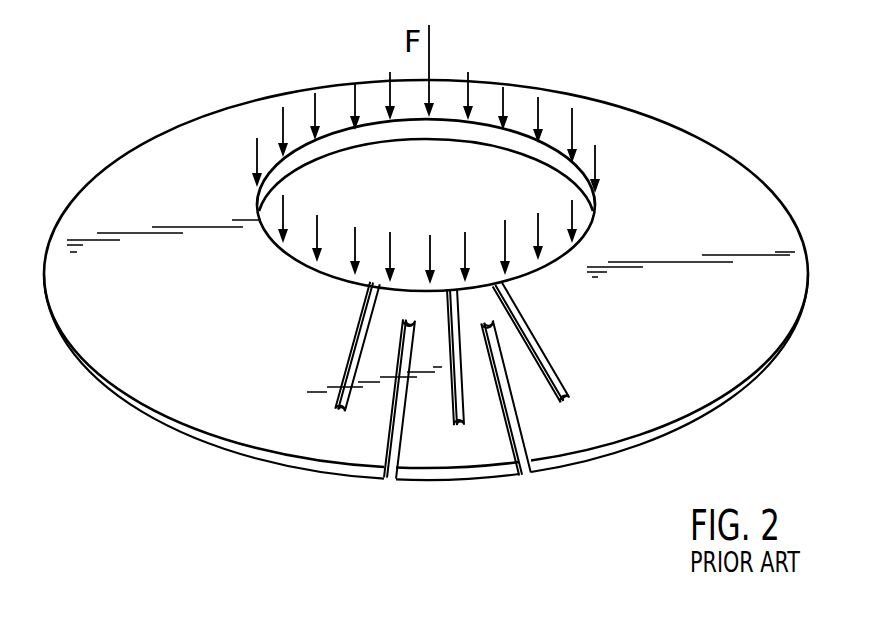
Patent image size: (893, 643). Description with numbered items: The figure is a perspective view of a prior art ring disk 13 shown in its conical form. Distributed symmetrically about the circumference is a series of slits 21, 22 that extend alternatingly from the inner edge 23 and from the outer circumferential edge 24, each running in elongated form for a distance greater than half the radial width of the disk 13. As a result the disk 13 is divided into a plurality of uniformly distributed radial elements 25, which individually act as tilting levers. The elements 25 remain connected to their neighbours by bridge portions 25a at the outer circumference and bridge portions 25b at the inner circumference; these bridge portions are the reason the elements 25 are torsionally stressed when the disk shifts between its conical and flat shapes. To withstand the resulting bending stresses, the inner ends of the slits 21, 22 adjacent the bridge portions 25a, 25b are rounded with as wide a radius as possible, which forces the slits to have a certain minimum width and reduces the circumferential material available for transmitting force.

The ring disk 13 is at (162, 150).
The slit 21 is at (330, 412).
The slit 22 is at (510, 417).
The inner edge 23 is at (592, 228).
The outer circumferential edge 24 is at (105, 378).
The radial element 25 is at (430, 405).
The bridge portion 25a is at (460, 442).
The bridge portion 25b is at (478, 293).